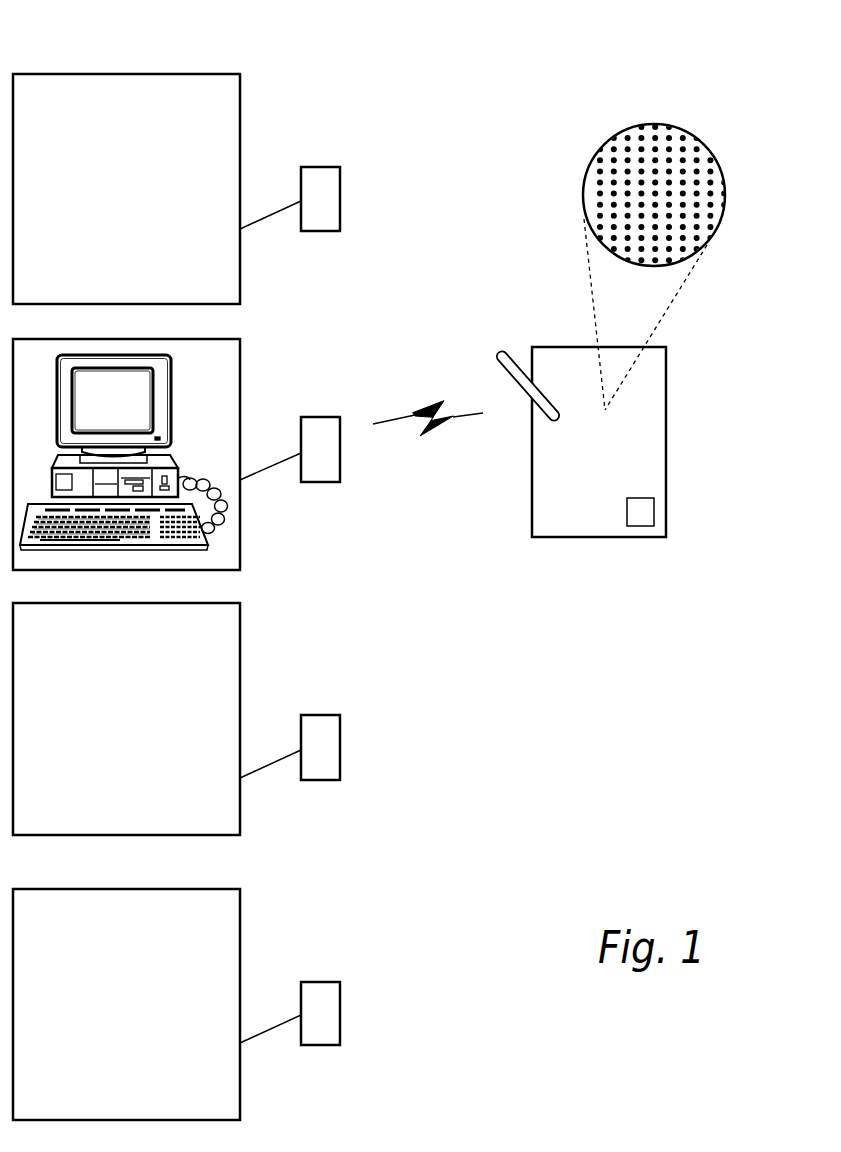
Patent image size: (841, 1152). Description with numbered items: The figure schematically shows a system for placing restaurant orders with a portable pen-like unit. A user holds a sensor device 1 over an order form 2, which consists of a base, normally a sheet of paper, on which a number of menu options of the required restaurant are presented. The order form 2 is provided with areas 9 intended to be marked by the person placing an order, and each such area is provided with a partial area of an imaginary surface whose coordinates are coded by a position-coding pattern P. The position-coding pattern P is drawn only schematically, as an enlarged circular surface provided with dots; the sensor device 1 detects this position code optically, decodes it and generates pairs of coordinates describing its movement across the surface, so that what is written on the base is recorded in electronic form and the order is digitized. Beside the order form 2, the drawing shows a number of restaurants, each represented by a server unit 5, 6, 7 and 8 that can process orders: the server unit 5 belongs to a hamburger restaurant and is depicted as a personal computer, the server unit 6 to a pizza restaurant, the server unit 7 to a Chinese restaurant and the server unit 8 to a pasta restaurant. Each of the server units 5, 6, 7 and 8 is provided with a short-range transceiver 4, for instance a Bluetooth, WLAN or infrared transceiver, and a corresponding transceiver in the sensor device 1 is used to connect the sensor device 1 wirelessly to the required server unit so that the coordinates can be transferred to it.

The sensor device 1 is at (508, 348).
The order form 2 is at (645, 430).
The short-range transceiver 4 is at (328, 167).
The server unit 5 is at (240, 352).
The server unit 6 is at (167, 73).
The server unit 7 is at (240, 655).
The server unit 8 is at (240, 935).
The area 9 is at (654, 512).
The position-coding pattern P is at (703, 170).